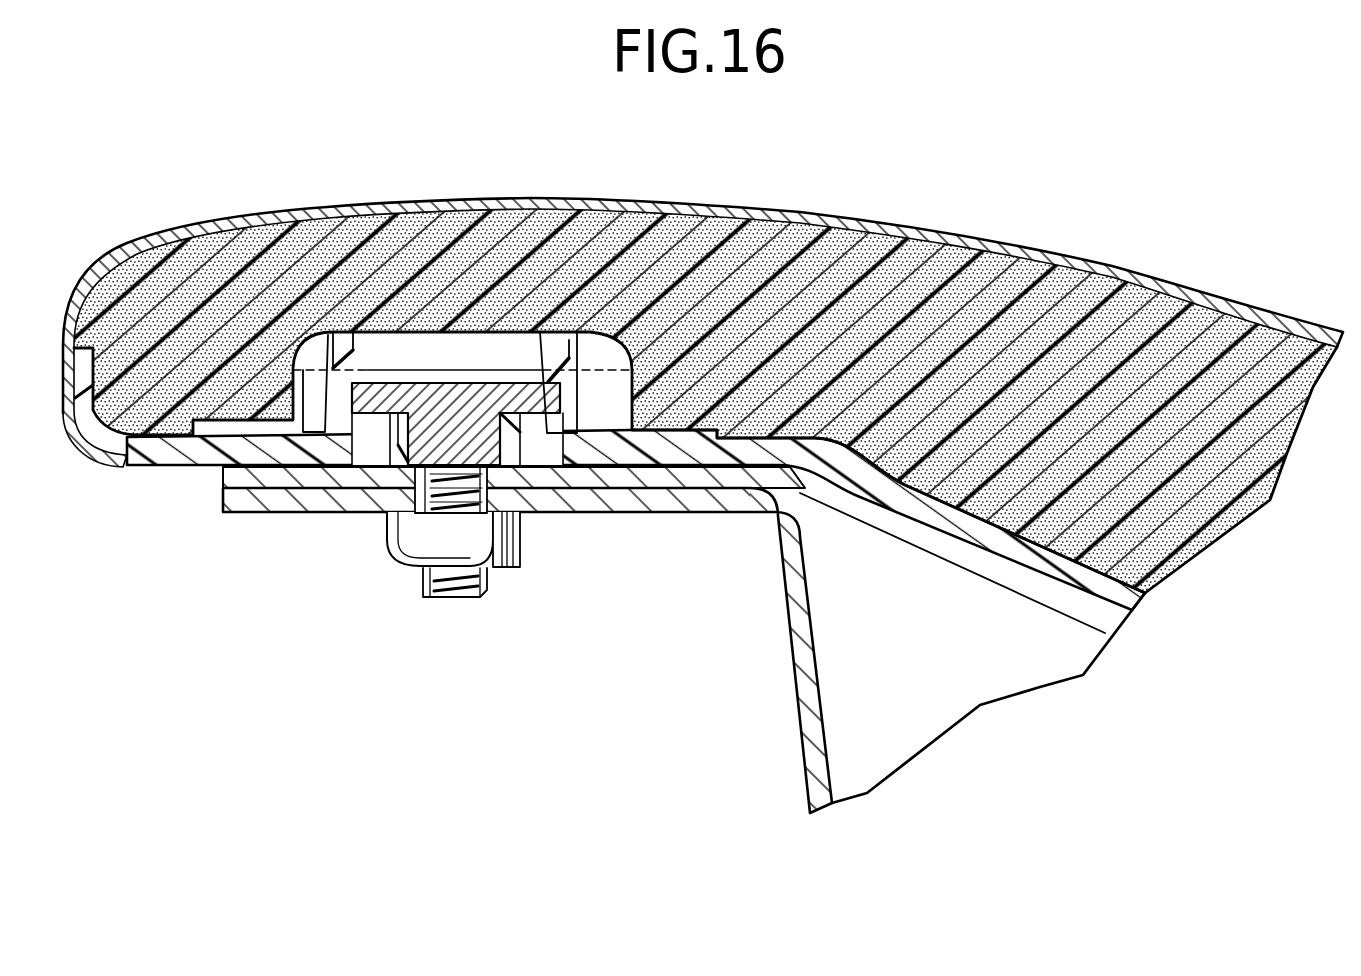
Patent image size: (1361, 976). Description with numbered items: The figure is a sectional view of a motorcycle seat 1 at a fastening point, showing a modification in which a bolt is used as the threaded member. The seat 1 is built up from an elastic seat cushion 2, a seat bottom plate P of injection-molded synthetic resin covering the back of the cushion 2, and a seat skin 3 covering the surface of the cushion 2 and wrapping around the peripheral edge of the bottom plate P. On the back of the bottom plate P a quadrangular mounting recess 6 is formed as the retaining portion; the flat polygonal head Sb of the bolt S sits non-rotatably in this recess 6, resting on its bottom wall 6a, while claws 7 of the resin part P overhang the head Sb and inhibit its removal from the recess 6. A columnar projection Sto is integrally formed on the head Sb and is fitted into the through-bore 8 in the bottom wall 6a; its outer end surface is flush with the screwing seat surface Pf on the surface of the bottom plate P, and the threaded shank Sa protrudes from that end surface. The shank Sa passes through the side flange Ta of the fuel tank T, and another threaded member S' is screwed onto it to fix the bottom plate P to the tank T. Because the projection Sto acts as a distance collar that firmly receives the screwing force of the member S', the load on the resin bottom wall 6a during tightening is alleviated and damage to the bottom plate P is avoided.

The seat 1 is at (703, 366).
The seat cushion 2 is at (1237, 507).
The seat skin 3 is at (847, 210).
The mounting recess 6 is at (470, 348).
The bottom wall 6a is at (517, 443).
The claws 7 is at (357, 353).
The through-bore 8 is at (375, 487).
The bolt S is at (435, 576).
The threaded shank Sa is at (457, 597).
The polygonal head Sb is at (446, 395).
The other threaded member S' is at (524, 590).
The columnar projection Sto is at (435, 462).
The seat bottom plate P is at (662, 553).
The screwing seat surface Pf is at (513, 447).
The fuel tank T is at (675, 650).
The side flange Ta is at (288, 513).